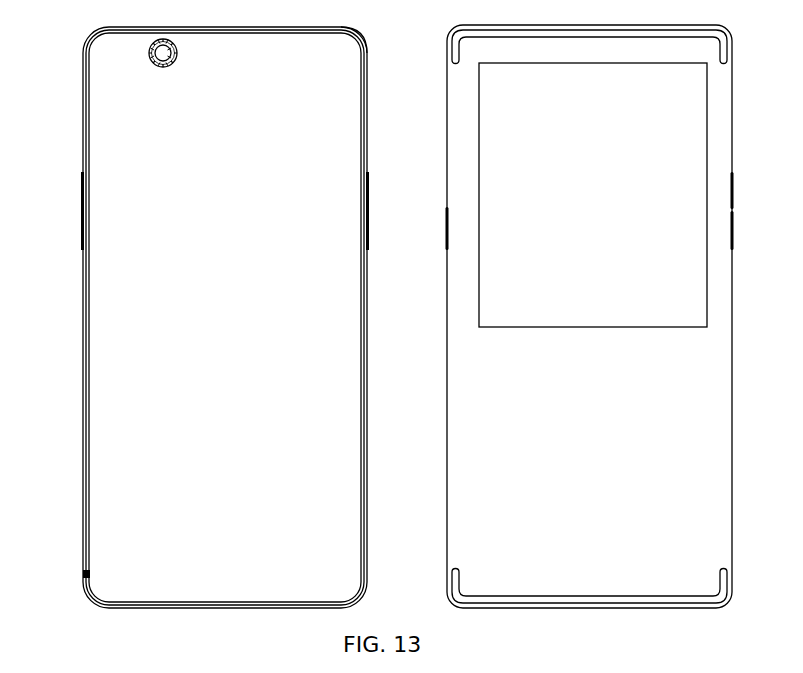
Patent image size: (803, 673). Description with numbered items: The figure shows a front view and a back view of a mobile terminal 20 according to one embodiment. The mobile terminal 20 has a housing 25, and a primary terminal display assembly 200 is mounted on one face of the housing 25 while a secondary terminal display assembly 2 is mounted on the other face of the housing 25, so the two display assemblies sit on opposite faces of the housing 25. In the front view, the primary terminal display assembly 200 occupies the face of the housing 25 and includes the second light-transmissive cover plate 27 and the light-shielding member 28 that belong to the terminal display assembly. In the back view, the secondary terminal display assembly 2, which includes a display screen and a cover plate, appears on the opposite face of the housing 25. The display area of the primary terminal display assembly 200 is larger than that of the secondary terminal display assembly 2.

The mobile terminal 20 is at (82, 40).
The primary terminal display assembly 200 is at (291, 29).
The housing 25 is at (448, 37).
The second light-transmissive cover plate 27 is at (166, 45).
The light-shielding member 28 is at (179, 48).
The secondary terminal display assembly 2 is at (595, 60).